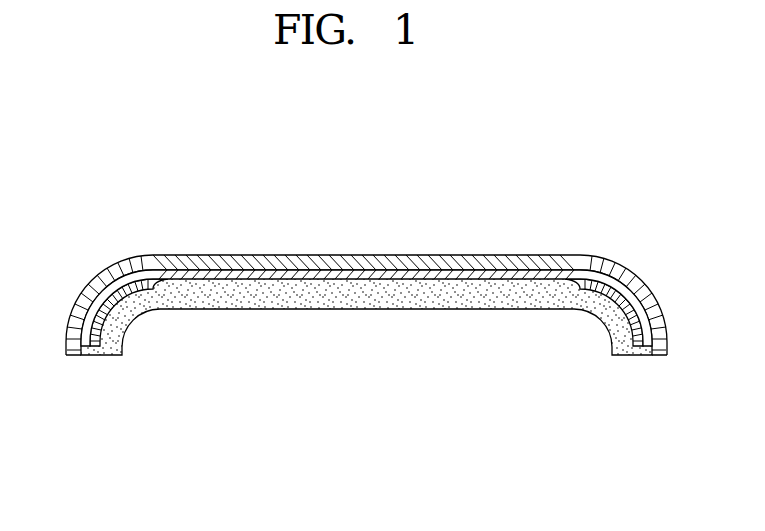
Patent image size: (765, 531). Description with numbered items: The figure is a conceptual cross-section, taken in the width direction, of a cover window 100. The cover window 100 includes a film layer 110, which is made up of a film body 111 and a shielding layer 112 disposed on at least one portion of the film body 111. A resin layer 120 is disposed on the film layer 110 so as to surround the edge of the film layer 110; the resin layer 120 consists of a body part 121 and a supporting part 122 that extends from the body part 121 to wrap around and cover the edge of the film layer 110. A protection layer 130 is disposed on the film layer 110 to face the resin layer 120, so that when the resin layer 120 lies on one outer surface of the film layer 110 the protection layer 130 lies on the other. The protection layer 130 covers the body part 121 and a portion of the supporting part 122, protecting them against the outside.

The cover window 100 is at (128, 157).
The film layer 110 is at (622, 193).
The film body 111 is at (533, 257).
The shielding layer 112 is at (618, 263).
The resin layer 120 is at (293, 402).
The body part 121 is at (277, 298).
The supporting part 122 is at (90, 347).
The protection layer 130 is at (215, 259).